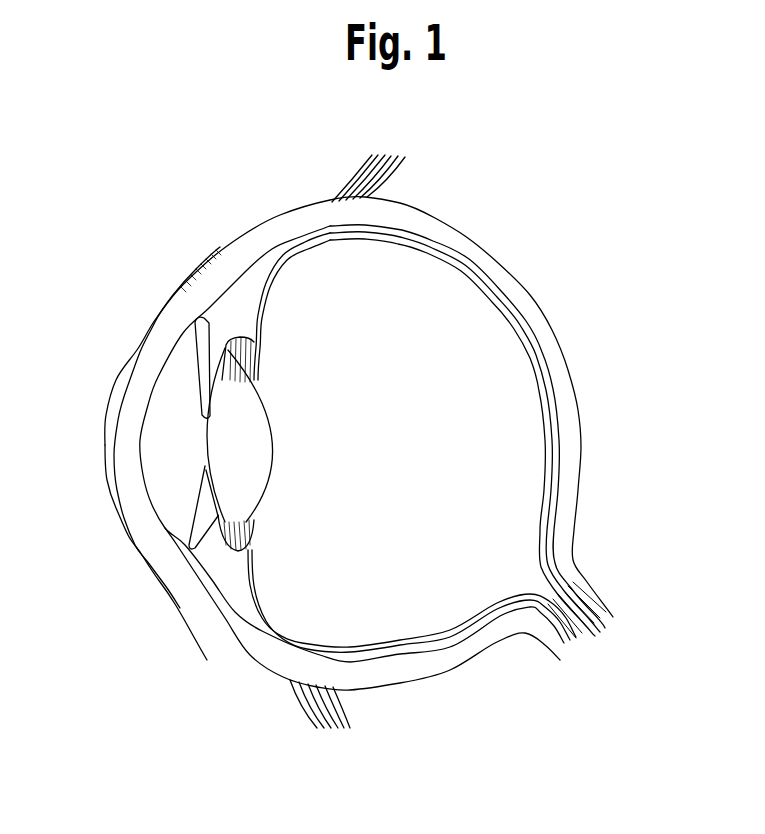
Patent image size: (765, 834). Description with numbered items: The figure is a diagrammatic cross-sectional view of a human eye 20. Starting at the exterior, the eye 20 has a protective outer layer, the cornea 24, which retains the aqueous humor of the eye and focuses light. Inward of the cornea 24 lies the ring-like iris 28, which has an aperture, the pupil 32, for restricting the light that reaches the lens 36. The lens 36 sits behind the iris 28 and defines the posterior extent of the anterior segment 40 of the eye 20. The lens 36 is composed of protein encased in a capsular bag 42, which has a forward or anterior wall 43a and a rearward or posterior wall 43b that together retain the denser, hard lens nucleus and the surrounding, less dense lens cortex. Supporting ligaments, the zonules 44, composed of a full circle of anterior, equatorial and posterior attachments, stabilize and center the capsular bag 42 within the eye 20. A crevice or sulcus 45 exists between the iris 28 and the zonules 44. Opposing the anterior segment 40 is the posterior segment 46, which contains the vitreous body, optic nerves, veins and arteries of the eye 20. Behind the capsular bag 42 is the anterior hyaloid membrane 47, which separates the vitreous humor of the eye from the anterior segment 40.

The eye 20 is at (506, 229).
The cornea 24 is at (203, 290).
The iris 28 is at (205, 380).
The pupil 32 is at (193, 452).
The lens 36 is at (237, 380).
The anterior segment 40 is at (174, 498).
The capsular bag 42 is at (245, 490).
The anterior wall 43a is at (207, 437).
The posterior wall 43b is at (272, 440).
The zonules 44 is at (234, 548).
The sulcus 45 is at (219, 529).
The posterior segment 46 is at (508, 343).
The anterior hyaloid membrane 47 is at (245, 337).